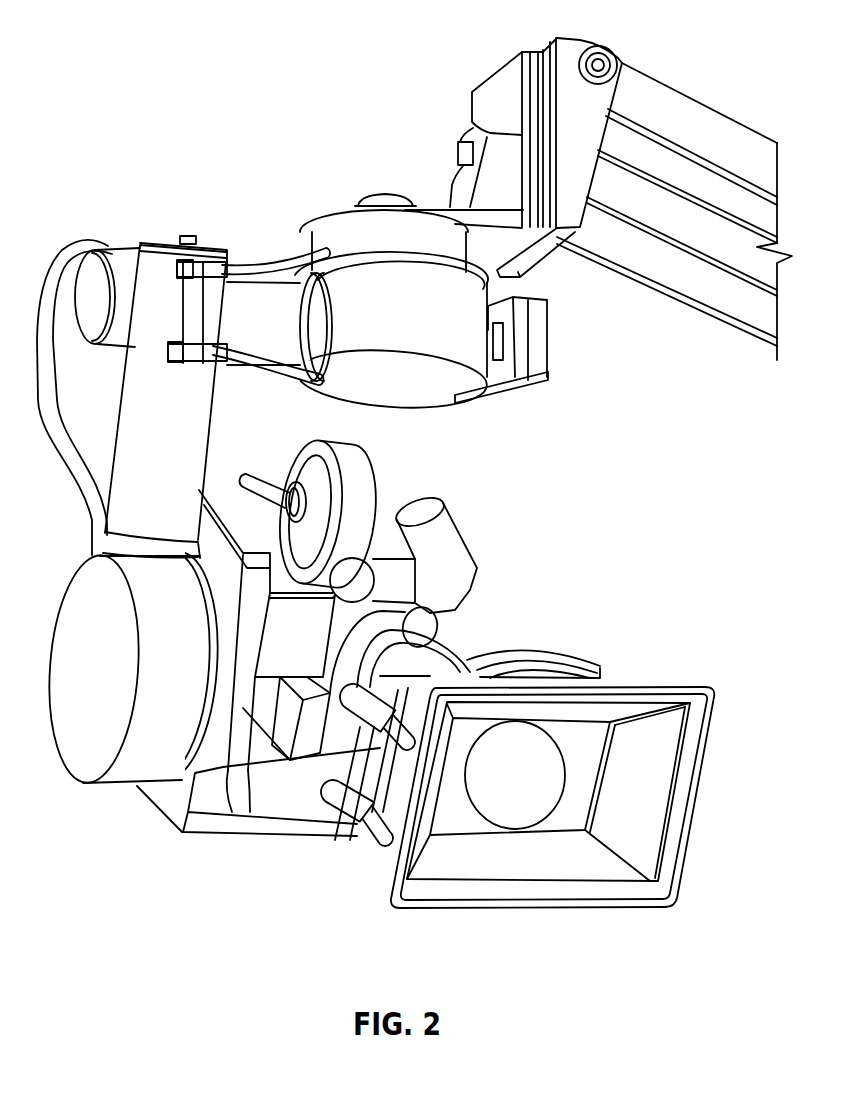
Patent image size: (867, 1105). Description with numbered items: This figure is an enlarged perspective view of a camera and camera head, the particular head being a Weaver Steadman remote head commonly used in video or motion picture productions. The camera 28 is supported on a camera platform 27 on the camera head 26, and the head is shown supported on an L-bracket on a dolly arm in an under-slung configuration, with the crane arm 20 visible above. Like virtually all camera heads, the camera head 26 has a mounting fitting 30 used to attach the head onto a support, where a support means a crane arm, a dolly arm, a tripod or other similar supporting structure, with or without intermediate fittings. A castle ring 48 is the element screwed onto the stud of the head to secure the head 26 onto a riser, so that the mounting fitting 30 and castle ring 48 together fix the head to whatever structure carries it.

The crane arm 20 is at (690, 277).
The camera head 26 is at (150, 275).
The camera platform 27 is at (240, 824).
The camera 28 is at (440, 663).
The mounting fitting 30 is at (311, 242).
The castle ring 48 is at (377, 200).